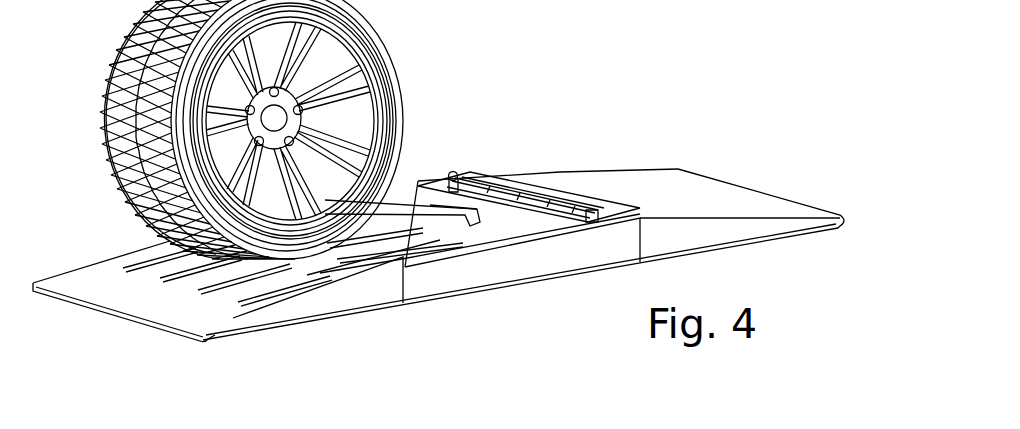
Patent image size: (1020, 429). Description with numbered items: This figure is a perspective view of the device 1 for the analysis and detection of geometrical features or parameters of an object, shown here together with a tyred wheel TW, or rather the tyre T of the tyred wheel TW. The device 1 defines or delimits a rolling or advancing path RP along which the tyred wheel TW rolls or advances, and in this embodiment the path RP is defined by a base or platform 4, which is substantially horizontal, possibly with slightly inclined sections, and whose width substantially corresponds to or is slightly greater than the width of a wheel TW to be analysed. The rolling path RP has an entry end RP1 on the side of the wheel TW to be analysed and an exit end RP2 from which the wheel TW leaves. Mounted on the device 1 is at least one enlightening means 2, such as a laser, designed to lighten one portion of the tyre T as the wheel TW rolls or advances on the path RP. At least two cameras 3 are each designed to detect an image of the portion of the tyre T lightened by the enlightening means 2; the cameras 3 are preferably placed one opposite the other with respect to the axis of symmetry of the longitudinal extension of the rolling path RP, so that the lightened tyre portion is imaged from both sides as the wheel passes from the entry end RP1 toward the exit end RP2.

The device 1 is at (576, 203).
The enlightening means 2 is at (473, 215).
The cameras 3 is at (452, 172).
The base or platform 4 is at (435, 299).
The tyre T is at (117, 169).
The tyred wheel TW is at (281, 129).
The rolling path RP is at (592, 187).
The entry end RP1 is at (128, 310).
The exit end RP2 is at (780, 197).